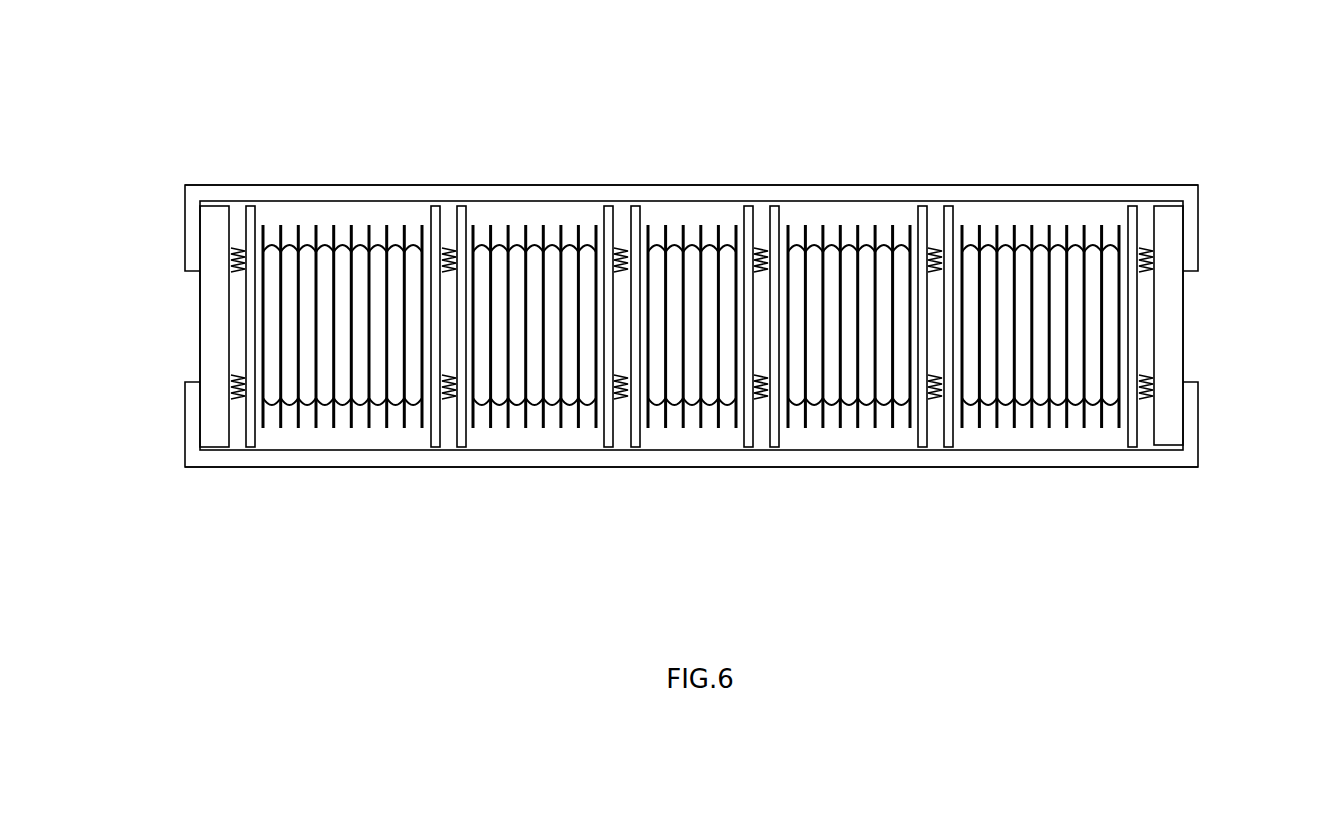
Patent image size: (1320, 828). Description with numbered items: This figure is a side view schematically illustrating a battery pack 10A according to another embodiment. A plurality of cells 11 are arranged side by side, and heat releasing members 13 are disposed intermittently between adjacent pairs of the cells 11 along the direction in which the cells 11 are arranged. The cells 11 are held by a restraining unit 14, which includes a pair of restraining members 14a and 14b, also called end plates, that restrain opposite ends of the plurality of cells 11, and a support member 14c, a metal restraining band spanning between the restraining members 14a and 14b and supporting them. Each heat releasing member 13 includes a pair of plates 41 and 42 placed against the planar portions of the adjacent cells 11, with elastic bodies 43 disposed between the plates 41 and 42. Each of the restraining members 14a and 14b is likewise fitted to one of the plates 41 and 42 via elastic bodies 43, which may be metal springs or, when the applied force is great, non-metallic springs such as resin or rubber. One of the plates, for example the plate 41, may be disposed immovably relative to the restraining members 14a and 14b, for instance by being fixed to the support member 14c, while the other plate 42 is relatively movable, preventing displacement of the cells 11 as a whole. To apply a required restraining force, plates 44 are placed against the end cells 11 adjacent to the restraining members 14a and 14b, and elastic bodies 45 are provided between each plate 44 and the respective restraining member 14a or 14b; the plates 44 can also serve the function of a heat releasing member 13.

The battery pack 10A is at (1047, 122).
The cell 11 is at (323, 245).
The heat releasing member 13 is at (262, 437).
The restraining unit 14 is at (1215, 180).
The restraining member 14a is at (200, 312).
The restraining member 14b is at (1183, 311).
The support member 14c is at (1163, 185).
The plate 41 is at (430, 218).
The plate 42 is at (468, 218).
The elastic body 43 is at (444, 242).
The plate 44 is at (256, 216).
The elastic body 45 is at (238, 247).